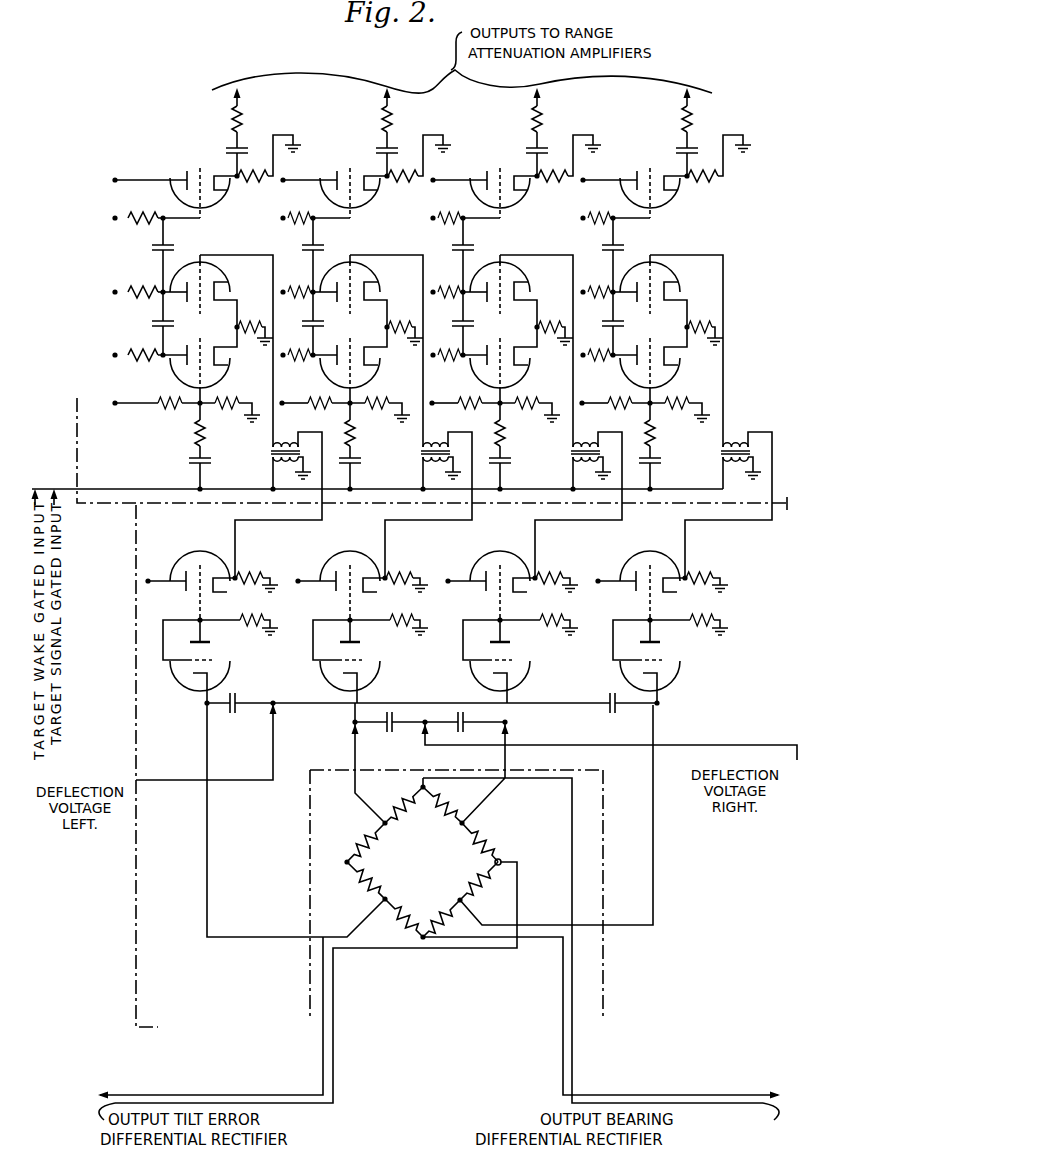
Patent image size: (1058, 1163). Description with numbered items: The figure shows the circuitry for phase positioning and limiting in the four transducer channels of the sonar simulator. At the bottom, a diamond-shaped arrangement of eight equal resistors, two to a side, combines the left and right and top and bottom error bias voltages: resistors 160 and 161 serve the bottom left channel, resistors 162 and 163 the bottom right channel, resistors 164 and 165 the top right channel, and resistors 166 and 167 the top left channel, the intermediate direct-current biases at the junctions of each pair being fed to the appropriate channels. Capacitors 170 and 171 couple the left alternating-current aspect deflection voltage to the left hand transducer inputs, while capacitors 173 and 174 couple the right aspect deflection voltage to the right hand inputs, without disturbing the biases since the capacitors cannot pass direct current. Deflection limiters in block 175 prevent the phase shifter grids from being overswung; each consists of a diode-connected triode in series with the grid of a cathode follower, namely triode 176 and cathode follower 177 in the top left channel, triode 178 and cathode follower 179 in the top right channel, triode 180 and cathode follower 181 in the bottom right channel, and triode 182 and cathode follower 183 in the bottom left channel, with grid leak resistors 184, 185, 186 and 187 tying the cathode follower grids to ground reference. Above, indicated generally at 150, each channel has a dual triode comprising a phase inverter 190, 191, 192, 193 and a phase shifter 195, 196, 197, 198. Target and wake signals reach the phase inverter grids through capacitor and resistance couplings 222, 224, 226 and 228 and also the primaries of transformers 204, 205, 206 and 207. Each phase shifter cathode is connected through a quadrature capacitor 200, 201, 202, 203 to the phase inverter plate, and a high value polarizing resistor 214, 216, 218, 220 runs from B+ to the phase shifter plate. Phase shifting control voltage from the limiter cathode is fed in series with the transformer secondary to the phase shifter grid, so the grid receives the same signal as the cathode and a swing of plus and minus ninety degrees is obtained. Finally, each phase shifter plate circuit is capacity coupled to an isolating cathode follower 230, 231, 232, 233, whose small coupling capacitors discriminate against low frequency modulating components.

The gated amplifier unit 150 is at (735, 336).
The resistor 160 is at (446, 892).
The resistor 161 is at (470, 890).
The resistor 162 is at (482, 836).
The resistor 163 is at (440, 800).
The resistor 164 is at (378, 845).
The resistor 165 is at (400, 812).
The resistor 166 is at (378, 878).
The resistor 167 is at (411, 914).
The capacitor 170 is at (240, 698).
The capacitor 171 is at (620, 708).
The capacitor 173 is at (394, 720).
The capacitor 174 is at (465, 720).
The deflection limiter block 175 is at (136, 887).
The triode 176 is at (228, 667).
The cathode follower 177 is at (180, 554).
The triode 178 is at (378, 667).
The cathode follower 179 is at (330, 554).
The triode 180 is at (528, 667).
The cathode follower 181 is at (480, 554).
The triode 182 is at (678, 667).
The cathode follower 183 is at (630, 554).
The grid leak resistor 184 is at (239, 616).
The grid leak resistor 185 is at (389, 616).
The grid leak resistor 186 is at (539, 616).
The grid leak resistor 187 is at (723, 630).
The triode phase inverter 190 is at (170, 373).
The triode phase inverter 191 is at (320, 373).
The triode phase inverter 192 is at (470, 373).
The triode phase inverter 193 is at (620, 373).
The triode phase shifter 195 is at (226, 273).
The triode phase shifter 196 is at (376, 273).
The triode phase shifter 197 is at (526, 273).
The triode phase shifter 198 is at (676, 273).
The quadrature capacitor 200 is at (150, 322).
The quadrature capacitor 201 is at (321, 324).
The quadrature capacitor 202 is at (472, 325).
The quadrature capacitor 203 is at (622, 325).
The transformer 204 is at (272, 463).
The transformer 205 is at (420, 464).
The transformer 206 is at (570, 464).
The transformer 207 is at (742, 444).
The high value resistor 214 is at (127, 291).
The high value resistor 216 is at (295, 291).
The high value resistor 218 is at (445, 291).
The high value resistor 220 is at (595, 291).
The capacitor and resistance coupling 222 is at (195, 453).
The capacitor and resistance coupling 224 is at (358, 445).
The capacitor and resistance coupling 226 is at (508, 445).
The capacitor and resistance coupling 228 is at (658, 445).
The isolating cathode follower 230 is at (222, 200).
The isolating cathode follower 231 is at (372, 200).
The isolating cathode follower 232 is at (522, 200).
The isolating cathode follower 233 is at (672, 200).